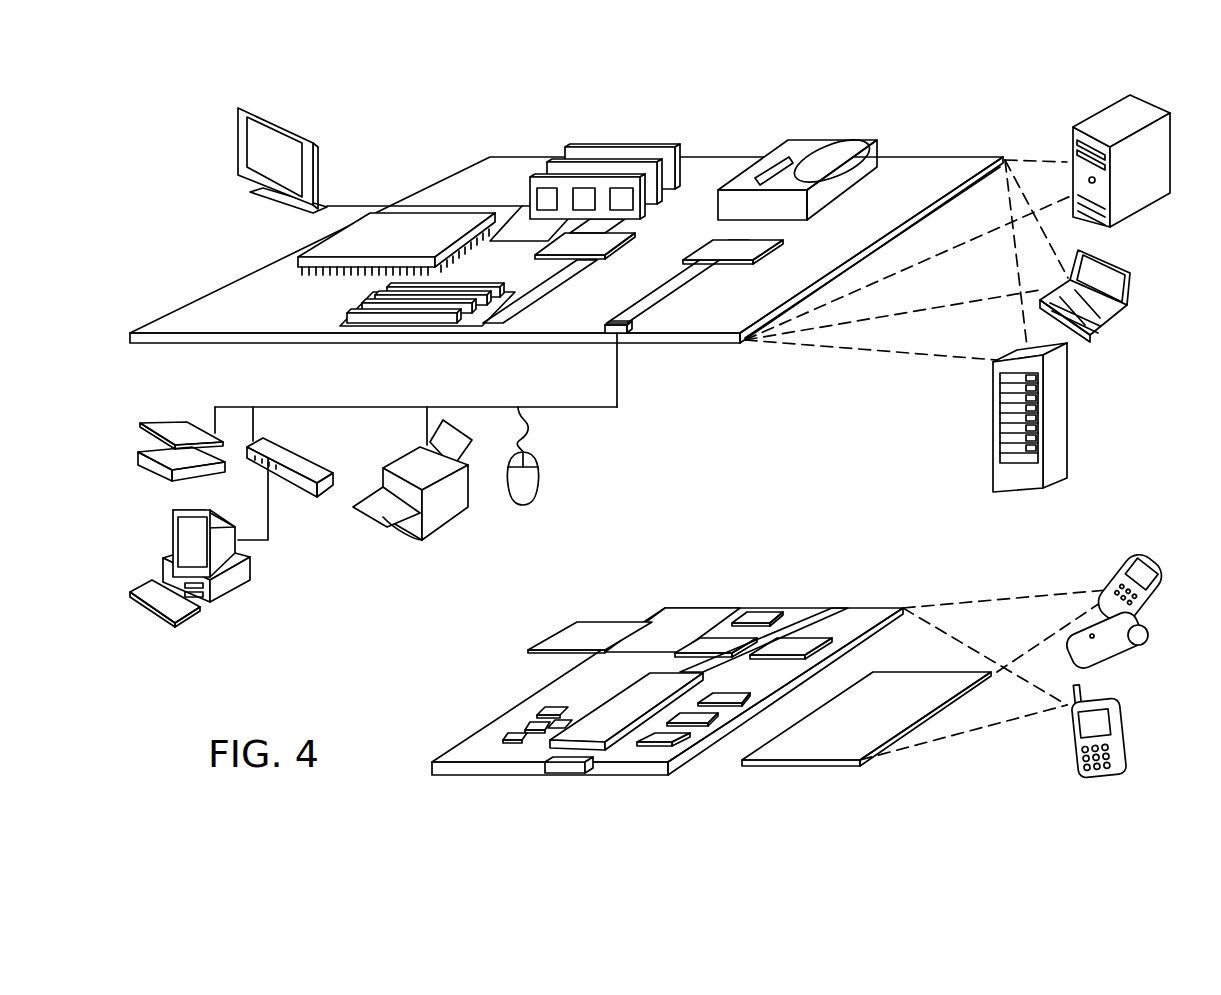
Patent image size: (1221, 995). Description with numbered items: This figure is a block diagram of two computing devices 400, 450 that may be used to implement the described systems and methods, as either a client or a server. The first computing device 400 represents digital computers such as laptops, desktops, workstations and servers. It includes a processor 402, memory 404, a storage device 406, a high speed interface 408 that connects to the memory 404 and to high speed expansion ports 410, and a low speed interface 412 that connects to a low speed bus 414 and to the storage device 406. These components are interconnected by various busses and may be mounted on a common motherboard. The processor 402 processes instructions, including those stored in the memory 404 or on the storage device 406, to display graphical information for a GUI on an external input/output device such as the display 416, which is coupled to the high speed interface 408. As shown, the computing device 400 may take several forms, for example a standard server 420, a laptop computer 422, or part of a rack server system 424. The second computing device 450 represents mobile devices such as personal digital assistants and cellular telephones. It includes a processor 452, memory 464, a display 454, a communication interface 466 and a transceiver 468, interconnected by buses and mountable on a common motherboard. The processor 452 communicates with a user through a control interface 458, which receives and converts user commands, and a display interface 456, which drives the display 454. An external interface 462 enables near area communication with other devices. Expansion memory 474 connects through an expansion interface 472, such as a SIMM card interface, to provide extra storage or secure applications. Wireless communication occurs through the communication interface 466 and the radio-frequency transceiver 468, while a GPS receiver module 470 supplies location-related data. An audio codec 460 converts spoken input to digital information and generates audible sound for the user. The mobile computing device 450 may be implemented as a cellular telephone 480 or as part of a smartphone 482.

The computing device 400 is at (411, 123).
The processor 402 is at (300, 258).
The memory 404 is at (590, 148).
The storage device 406 is at (793, 135).
The high speed interface 408 is at (560, 243).
The high speed expansion ports 410 is at (350, 308).
The low speed interface 412 is at (715, 250).
The low speed bus 414 is at (632, 334).
The display 416 is at (238, 108).
The standard server 420 is at (1073, 145).
The laptop computer 422 is at (1135, 270).
The rack server system 424 is at (993, 444).
The computing device 450 is at (468, 793).
The processor 452 is at (610, 727).
The display 454 is at (840, 742).
The display interface 456 is at (657, 742).
The control interface 458 is at (700, 723).
The audio codec 460 is at (730, 697).
The external interface 462 is at (563, 776).
The memory 464 is at (520, 725).
The communication interface 466 is at (710, 638).
The transceiver 468 is at (797, 642).
The GPS receiver module 470 is at (767, 610).
The expansion interface 472 is at (650, 622).
The expansion memory 474 is at (567, 630).
The cellular telephone 480 is at (1125, 565).
The smartphone 482 is at (1068, 737).